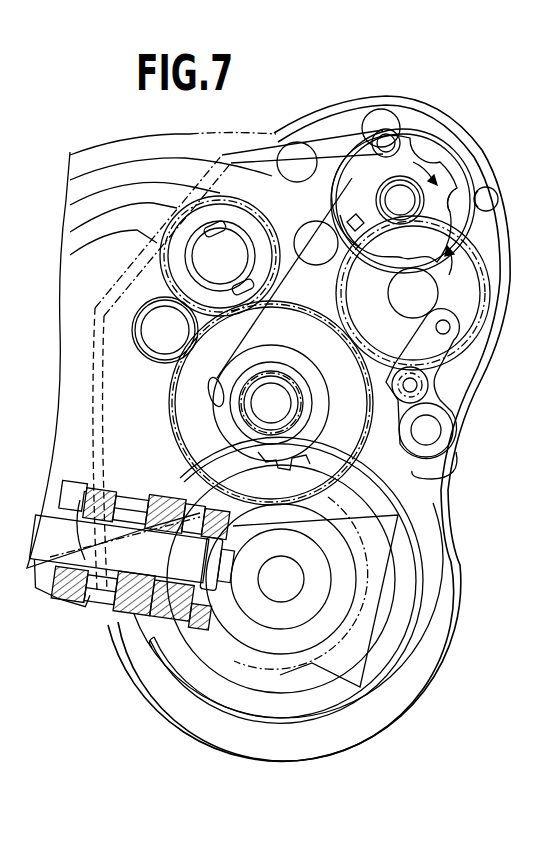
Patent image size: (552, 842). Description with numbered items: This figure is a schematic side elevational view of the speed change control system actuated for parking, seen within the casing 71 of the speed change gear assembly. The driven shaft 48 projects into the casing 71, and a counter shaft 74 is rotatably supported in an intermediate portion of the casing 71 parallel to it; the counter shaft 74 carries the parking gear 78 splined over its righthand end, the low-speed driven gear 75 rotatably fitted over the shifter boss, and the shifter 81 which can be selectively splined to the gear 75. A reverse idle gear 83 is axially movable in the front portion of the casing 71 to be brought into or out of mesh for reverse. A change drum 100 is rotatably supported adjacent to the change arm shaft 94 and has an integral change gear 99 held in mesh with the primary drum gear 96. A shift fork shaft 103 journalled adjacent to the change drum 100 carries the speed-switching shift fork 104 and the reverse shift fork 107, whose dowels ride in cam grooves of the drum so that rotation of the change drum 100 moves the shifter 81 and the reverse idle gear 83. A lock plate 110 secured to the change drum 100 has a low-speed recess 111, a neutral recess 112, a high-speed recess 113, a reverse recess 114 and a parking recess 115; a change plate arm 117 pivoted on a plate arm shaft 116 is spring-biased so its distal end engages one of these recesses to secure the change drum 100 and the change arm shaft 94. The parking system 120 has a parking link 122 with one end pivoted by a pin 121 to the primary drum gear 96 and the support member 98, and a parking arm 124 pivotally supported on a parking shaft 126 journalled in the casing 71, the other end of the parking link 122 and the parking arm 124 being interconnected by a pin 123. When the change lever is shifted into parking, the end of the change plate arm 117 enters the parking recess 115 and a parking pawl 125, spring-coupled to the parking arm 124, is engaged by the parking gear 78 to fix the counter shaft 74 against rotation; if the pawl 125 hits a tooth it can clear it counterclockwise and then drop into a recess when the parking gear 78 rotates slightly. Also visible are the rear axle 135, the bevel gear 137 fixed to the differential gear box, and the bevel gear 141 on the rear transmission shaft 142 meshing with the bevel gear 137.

The driven shaft 48 is at (112, 310).
The casing 71 is at (400, 101).
The counter shaft 74 is at (257, 393).
The low-speed driven gear 75 is at (170, 405).
The parking gear 78 is at (333, 473).
The shifter 81 is at (203, 248).
The reverse idle gear 83 is at (160, 255).
The change arm shaft 94 is at (432, 293).
The primary drum gear 96 is at (488, 280).
The support member 98 is at (466, 312).
The change gear 99 is at (440, 227).
The change drum 100 is at (477, 199).
The shift fork shaft 103 is at (327, 237).
The speed-switching shift fork 104 is at (173, 283).
The reverse shift fork 107 is at (268, 237).
The lock plate 110 is at (448, 177).
The low-speed recess 111 is at (383, 253).
The neutral recess 112 is at (456, 240).
The high-speed recess 113 is at (449, 197).
The reverse recess 114 is at (420, 167).
The parking recess 115 is at (396, 147).
The plate arm shaft 116 is at (290, 150).
The change plate arm 117 is at (343, 145).
The parking system 120 is at (471, 485).
The pin 121 is at (448, 330).
The parking link 122 is at (430, 376).
The pin 123 is at (418, 386).
The parking arm 124 is at (463, 453).
The parking pawl 125 is at (280, 458).
The parking shaft 126 is at (430, 430).
The rear axle 135 is at (288, 618).
The bevel gear 137 is at (227, 637).
The bevel gear 141 is at (180, 627).
The rear transmission shaft 142 is at (110, 600).